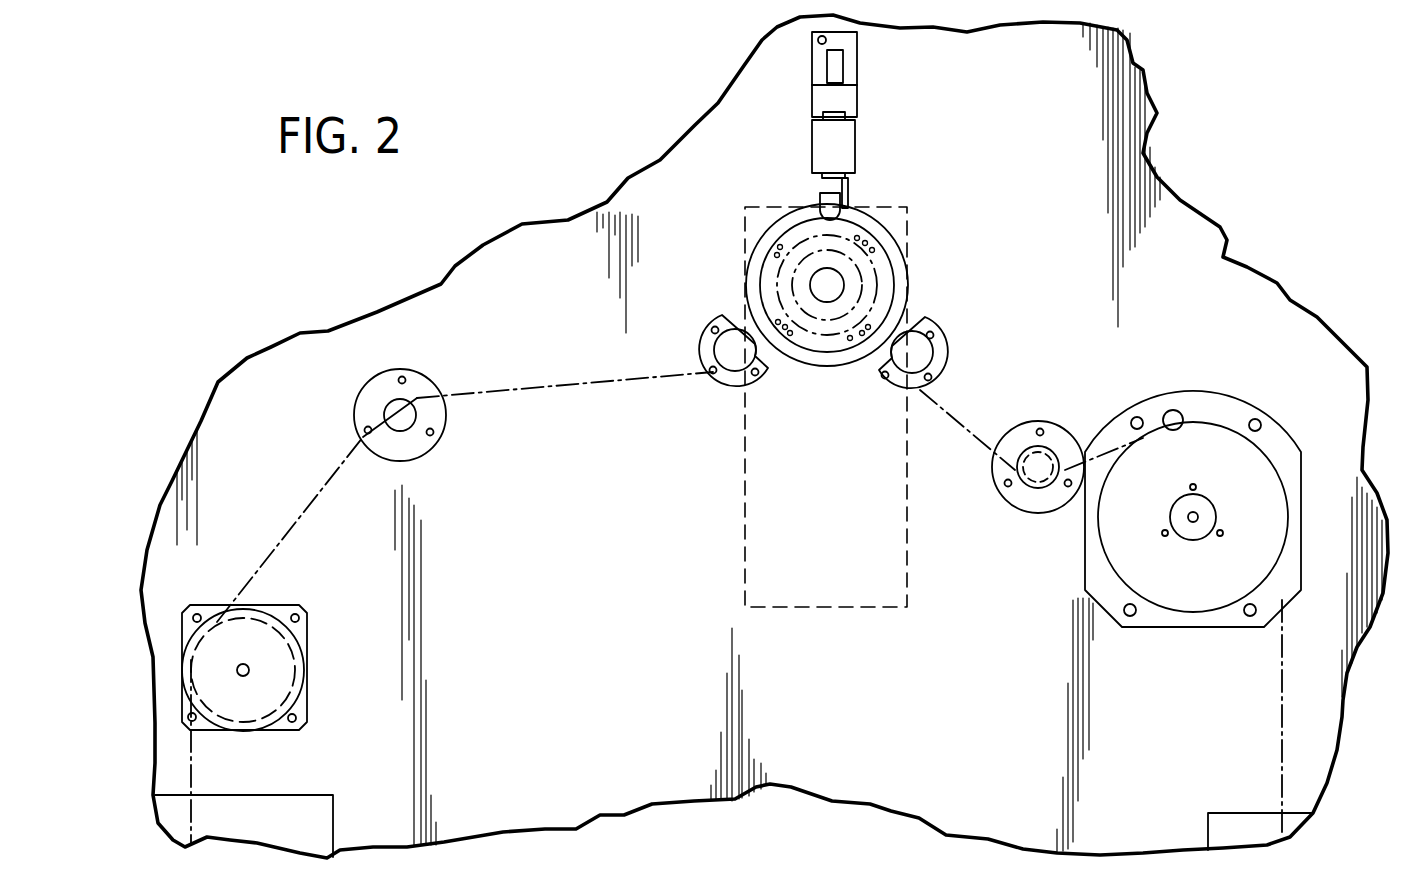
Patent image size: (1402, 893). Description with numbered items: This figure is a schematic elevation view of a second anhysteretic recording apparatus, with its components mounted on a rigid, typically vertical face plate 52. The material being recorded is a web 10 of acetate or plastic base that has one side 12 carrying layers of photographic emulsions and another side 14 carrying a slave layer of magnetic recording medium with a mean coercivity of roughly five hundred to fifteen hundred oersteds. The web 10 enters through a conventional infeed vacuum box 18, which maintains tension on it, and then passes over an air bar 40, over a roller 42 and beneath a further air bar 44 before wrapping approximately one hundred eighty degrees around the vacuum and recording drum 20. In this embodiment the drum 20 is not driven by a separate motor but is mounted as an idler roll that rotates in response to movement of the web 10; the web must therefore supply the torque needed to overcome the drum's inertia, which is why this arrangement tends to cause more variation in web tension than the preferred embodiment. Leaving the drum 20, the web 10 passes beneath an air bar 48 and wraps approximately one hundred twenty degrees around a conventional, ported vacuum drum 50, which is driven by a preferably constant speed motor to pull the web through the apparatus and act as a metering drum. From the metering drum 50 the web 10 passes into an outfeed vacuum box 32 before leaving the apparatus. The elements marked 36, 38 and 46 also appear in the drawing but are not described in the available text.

The web 10 is at (193, 772).
The emulsion side 12 is at (749, 602).
The magnetic side 14 is at (310, 507).
The infeed vacuum box 18 is at (322, 817).
The vacuum and recording drum 20 is at (892, 273).
The outfeed vacuum box 32 is at (1230, 817).
The head mounting bracket 36 is at (910, 126).
The head nozzle 38 is at (855, 197).
The air bar 40 is at (307, 653).
The roller 42 is at (420, 445).
The air bar 44 is at (710, 345).
The right drum bearing 46 is at (937, 350).
The air bar 48 is at (1050, 448).
The ported vacuum drum 50 is at (1117, 547).
The face plate 52 is at (898, 787).